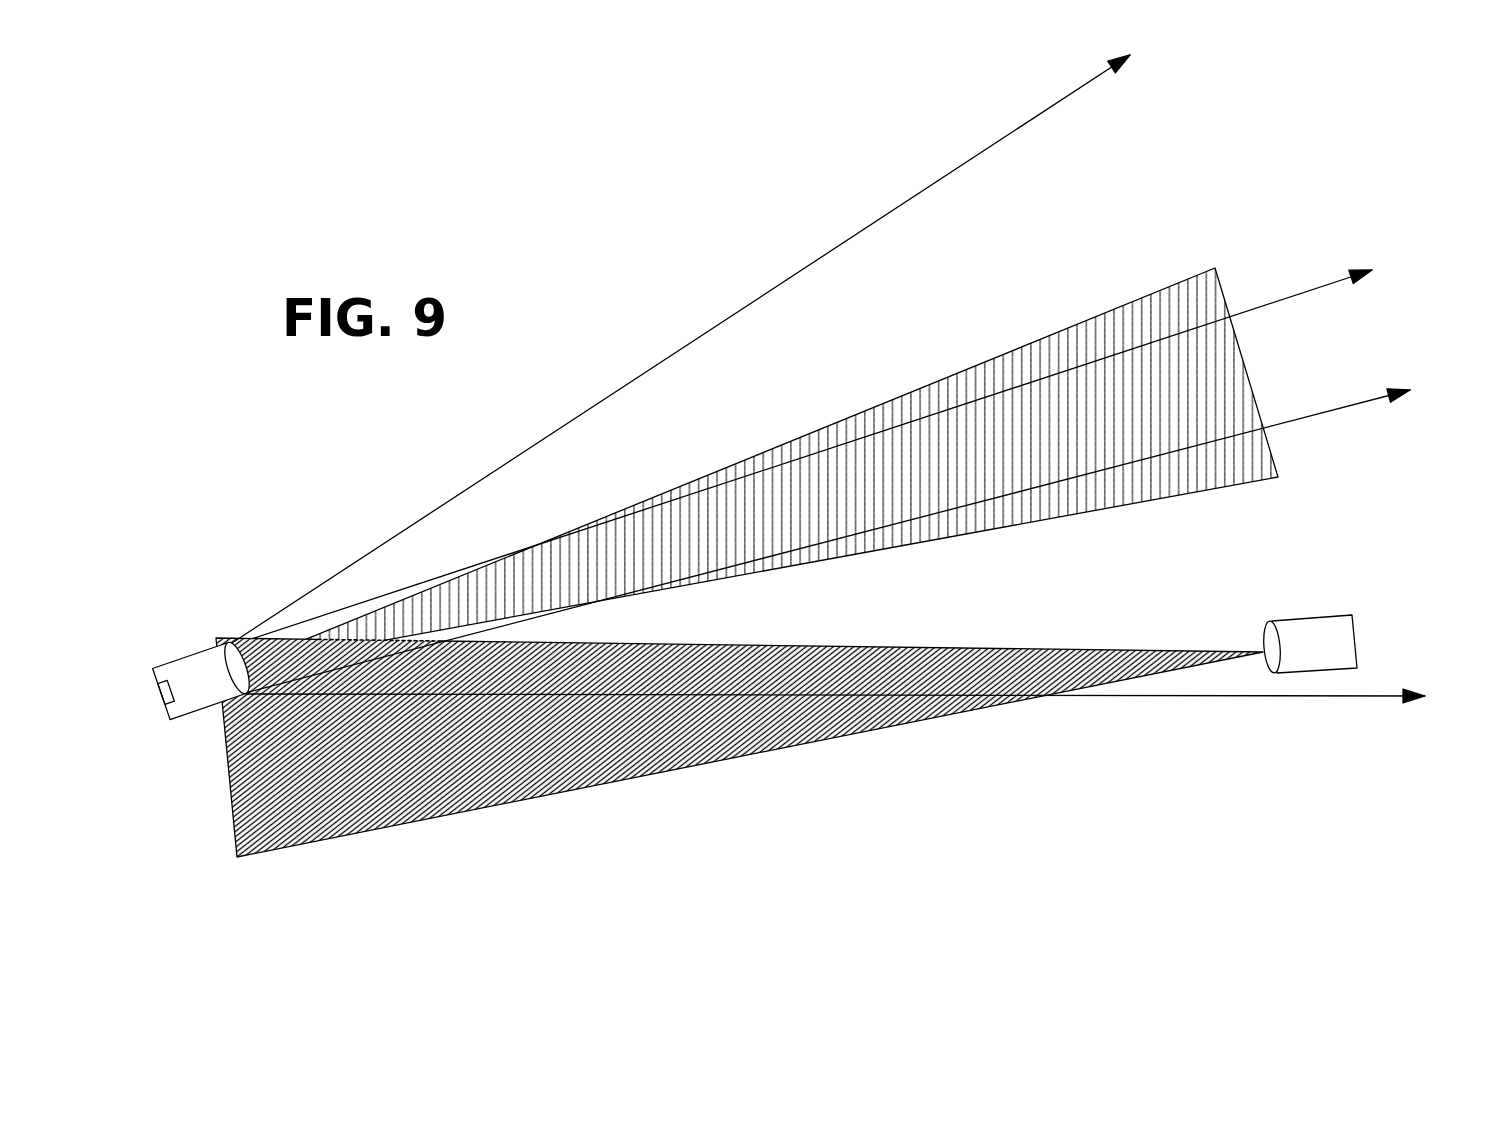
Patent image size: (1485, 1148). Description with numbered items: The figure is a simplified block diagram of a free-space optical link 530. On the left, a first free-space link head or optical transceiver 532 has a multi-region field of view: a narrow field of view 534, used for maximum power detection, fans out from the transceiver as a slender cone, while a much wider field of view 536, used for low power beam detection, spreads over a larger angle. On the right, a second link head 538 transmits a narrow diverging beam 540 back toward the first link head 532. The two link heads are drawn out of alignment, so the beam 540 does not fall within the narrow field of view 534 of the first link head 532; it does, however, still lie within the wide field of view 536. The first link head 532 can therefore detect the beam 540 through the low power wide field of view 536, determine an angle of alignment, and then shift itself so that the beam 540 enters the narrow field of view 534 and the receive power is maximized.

The link 530 is at (835, 676).
The first free-space link head 532 is at (183, 698).
The narrow field of view 534 is at (1302, 288).
The wide field of view 536 is at (1072, 95).
The second link head 538 is at (1317, 672).
The narrow diverging beam 540 is at (570, 788).